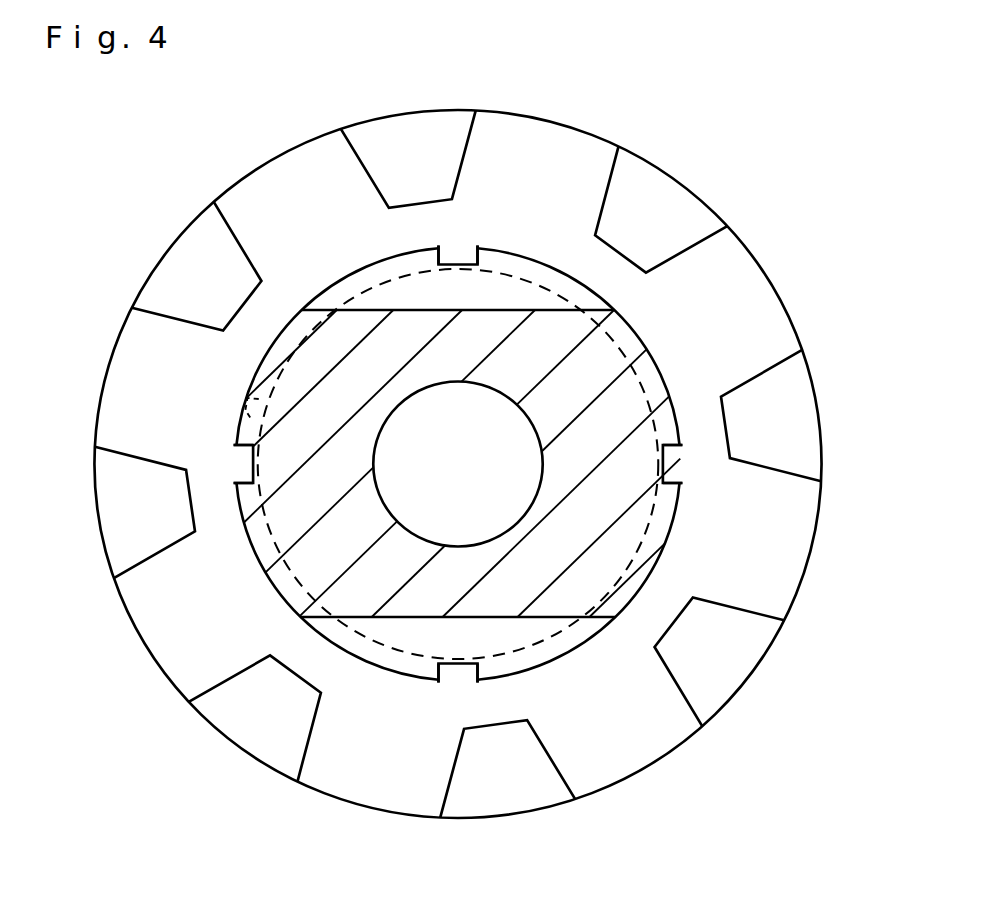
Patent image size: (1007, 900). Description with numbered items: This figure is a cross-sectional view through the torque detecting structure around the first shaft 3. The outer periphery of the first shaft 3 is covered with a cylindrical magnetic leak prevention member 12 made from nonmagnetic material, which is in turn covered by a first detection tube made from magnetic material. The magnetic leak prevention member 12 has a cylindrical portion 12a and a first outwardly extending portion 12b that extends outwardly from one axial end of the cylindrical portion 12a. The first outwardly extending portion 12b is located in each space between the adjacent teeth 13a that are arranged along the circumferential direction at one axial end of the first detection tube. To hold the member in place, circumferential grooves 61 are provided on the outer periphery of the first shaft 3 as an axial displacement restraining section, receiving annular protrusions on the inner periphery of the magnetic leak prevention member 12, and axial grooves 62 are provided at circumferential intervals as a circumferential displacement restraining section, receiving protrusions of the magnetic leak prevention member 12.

The first shaft 3 is at (600, 360).
The magnetic leak prevention member 12 is at (683, 346).
The cylindrical portion 12a is at (610, 272).
The first outwardly extending portion 12b is at (555, 165).
The teeth 13a is at (423, 157).
The circumferential grooves 61 is at (262, 402).
The axial grooves 62 is at (477, 257).